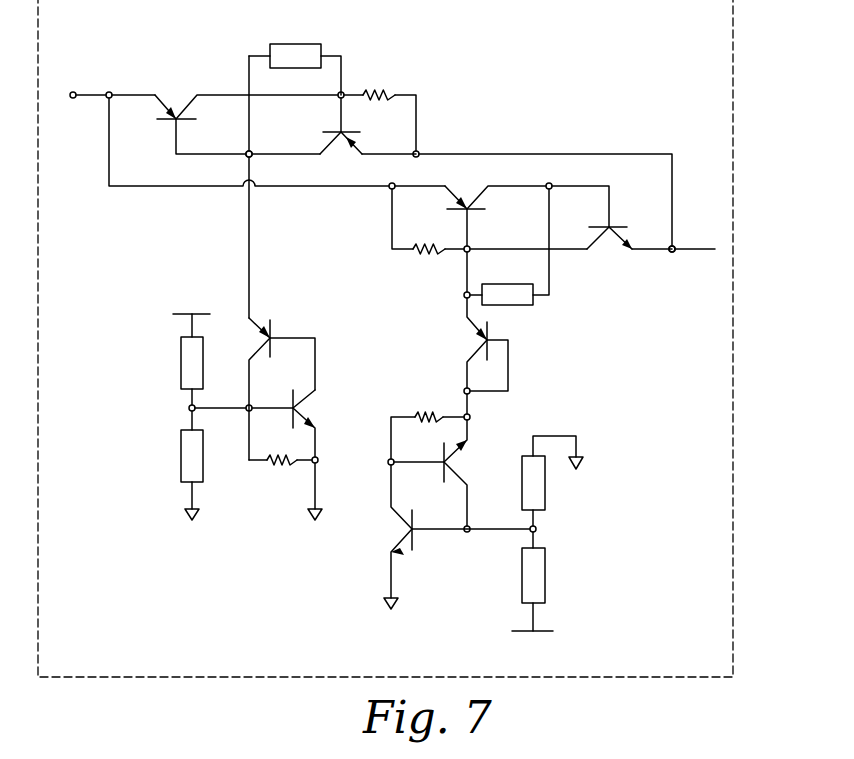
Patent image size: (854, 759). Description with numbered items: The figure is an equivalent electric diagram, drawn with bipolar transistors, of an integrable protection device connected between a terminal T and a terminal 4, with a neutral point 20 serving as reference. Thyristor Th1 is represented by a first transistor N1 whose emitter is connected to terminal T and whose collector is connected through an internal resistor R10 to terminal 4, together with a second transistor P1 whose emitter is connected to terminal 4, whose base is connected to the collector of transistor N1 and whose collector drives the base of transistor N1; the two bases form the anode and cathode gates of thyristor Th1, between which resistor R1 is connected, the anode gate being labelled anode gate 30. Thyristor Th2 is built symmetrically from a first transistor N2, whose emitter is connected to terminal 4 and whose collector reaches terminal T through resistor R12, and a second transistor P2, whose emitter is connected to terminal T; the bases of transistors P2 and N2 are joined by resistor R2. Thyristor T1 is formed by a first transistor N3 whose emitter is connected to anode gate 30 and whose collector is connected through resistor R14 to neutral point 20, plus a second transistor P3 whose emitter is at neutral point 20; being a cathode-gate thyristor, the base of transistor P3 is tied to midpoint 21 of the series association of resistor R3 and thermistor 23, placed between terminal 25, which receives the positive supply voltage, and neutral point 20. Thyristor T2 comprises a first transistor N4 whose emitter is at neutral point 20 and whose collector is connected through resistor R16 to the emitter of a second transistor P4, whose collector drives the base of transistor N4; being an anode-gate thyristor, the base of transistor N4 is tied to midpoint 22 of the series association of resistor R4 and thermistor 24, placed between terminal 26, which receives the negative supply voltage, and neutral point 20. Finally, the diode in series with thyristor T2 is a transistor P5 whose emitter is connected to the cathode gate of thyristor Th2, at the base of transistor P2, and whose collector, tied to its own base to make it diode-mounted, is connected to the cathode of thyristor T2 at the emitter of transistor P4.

The terminal 4 is at (675, 247).
The neutral point 20 is at (397, 605).
The midpoint 21 is at (189, 409).
The midpoint 22 is at (536, 531).
The thermistor 23 is at (203, 468).
The thermistor 24 is at (545, 497).
The terminal 25 is at (173, 314).
The terminal 26 is at (553, 633).
The anode gate 30 is at (252, 232).
The terminal T is at (89, 82).
The thyristor T1 is at (322, 302).
The thyristor T2 is at (410, 375).
The thyristor Th1 is at (177, 50).
The thyristor Th2 is at (623, 298).
The resistor R1 is at (295, 59).
The internal resistor R10 is at (380, 110).
The resistor R12 is at (429, 236).
The resistor R14 is at (282, 474).
The resistor R16 is at (427, 424).
The resistor R2 is at (509, 247).
The resistor R3 is at (181, 370).
The resistor R4 is at (545, 583).
The first transistor N1 is at (248, 119).
The first transistor N2 is at (609, 246).
The first transistor N3 is at (273, 389).
The first transistor N4 is at (394, 531).
The second transistor P1 is at (341, 134).
The second transistor P2 is at (497, 210).
The second transistor P3 is at (315, 449).
The second transistor P4 is at (441, 474).
The transistor P5 is at (480, 344).